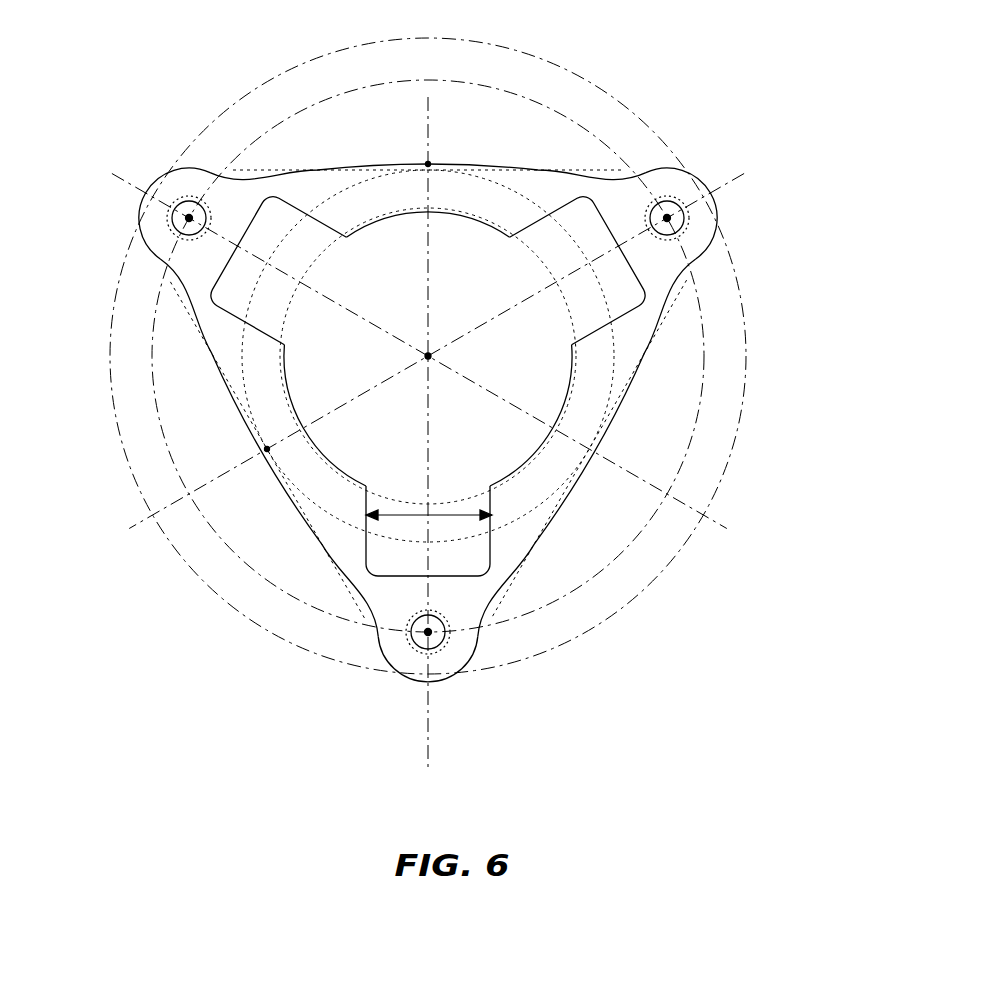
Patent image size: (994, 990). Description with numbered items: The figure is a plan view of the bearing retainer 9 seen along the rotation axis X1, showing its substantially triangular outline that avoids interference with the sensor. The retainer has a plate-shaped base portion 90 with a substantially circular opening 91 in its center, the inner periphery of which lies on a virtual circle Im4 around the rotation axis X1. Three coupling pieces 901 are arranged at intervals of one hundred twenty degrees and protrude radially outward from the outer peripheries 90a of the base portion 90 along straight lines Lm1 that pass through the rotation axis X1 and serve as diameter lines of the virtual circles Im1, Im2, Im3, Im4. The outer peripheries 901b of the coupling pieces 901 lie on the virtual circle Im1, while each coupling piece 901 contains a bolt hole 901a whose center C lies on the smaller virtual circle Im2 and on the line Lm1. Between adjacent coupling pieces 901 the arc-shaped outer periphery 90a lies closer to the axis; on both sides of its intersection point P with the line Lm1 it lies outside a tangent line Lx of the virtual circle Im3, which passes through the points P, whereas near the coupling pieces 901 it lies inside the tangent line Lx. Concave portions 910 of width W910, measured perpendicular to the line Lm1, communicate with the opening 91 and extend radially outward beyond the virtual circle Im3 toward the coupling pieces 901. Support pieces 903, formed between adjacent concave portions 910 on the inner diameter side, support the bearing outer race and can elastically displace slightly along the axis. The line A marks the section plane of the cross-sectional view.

The bearing retainer 9 is at (435, 416).
The base portion 90 is at (548, 185).
The outer periphery 90a is at (470, 167).
The coupling piece 901 is at (152, 252).
The bolt hole 901a is at (141, 220).
The outer periphery of coupling piece 901b is at (158, 183).
The support piece 903 is at (378, 212).
The opening 91 is at (337, 371).
The concave portion 910 is at (222, 312).
The rotation axis X1 is at (432, 356).
The tangent line Lx is at (427, 359).
The straight line Lm1 is at (428, 452).
The virtual circle Im1 is at (722, 480).
The virtual circle Im2 is at (672, 475).
The virtual circle Im3 is at (520, 196).
The virtual circle Im4 is at (541, 261).
The intersection point P is at (427, 162).
The center of bolt hole C is at (212, 217).
The width of concave portion W910 is at (429, 491).
The line A- A is at (430, 64).